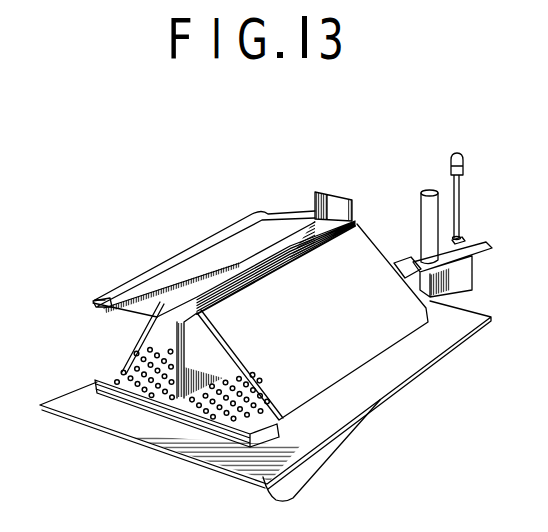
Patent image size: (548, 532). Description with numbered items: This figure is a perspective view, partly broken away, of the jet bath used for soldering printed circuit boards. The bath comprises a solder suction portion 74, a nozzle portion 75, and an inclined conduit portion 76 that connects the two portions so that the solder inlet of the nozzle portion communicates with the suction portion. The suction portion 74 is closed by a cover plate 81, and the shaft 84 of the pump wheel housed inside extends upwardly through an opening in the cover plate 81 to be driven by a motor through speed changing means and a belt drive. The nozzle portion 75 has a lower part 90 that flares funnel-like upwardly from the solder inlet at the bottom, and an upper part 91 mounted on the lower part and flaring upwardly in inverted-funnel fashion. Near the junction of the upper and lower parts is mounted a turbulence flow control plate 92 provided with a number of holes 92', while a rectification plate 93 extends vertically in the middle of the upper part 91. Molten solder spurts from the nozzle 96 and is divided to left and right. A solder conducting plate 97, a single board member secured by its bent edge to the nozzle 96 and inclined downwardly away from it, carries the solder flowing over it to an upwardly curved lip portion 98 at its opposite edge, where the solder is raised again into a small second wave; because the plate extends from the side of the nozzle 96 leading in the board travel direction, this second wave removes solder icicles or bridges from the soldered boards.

The solder suction portion 74 is at (462, 280).
The nozzle portion 75 is at (284, 210).
The conduit portion 76 is at (340, 432).
The cover plate 81 is at (417, 246).
The shaft 84 is at (433, 207).
The lower part 90 is at (219, 482).
The upper part 91 is at (182, 343).
The turbulence flow control plate 92 is at (109, 366).
The holes 92' is at (187, 428).
The rectification plate 93 is at (148, 339).
The nozzle 96 is at (245, 270).
The solder conducting plate 97 is at (157, 278).
The lip portion 98 is at (107, 298).